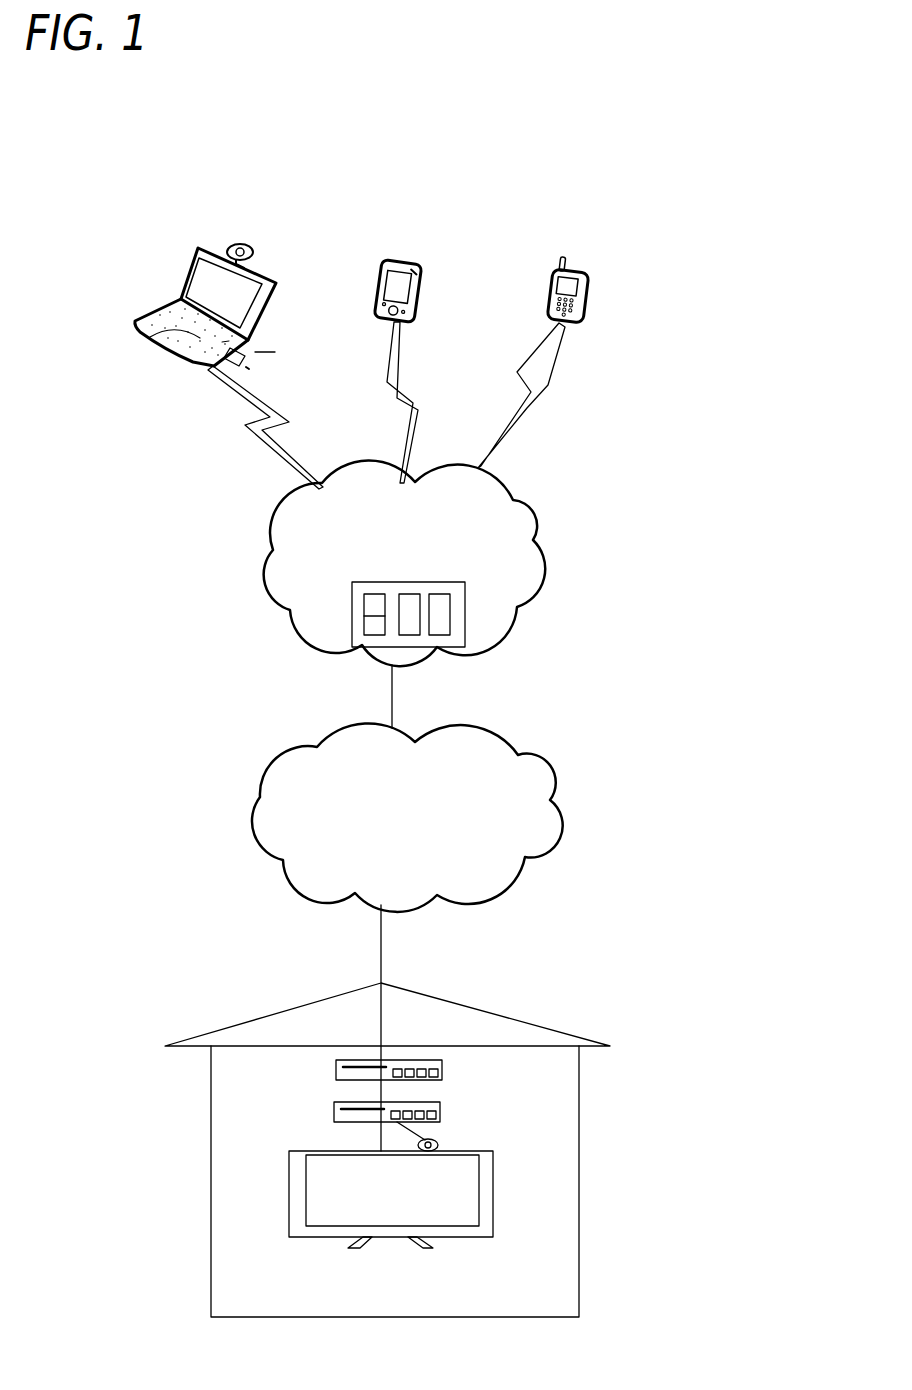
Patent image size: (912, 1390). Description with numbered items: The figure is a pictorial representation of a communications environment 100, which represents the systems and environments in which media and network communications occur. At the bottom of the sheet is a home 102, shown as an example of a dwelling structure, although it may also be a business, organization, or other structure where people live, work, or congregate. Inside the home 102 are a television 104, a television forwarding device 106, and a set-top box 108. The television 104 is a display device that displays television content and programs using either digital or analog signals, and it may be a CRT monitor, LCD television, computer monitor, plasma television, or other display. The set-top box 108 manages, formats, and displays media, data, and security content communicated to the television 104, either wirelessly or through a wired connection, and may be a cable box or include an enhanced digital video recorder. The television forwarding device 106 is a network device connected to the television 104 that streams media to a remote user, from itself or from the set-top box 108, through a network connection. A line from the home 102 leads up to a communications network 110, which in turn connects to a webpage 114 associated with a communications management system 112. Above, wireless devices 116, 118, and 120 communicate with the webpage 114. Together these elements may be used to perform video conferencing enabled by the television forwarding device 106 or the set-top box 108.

The communications environment 100 is at (775, 190).
The home 102 is at (588, 1036).
The television 104 is at (411, 1211).
The television forwarding device 106 is at (350, 1123).
The set-top box 108 is at (337, 1079).
The communications network 110 is at (425, 842).
The communications management system 112 is at (460, 618).
The webpage 114 is at (425, 559).
The wireless device 116 is at (185, 335).
The wireless device 118 is at (400, 268).
The wireless device 120 is at (578, 296).